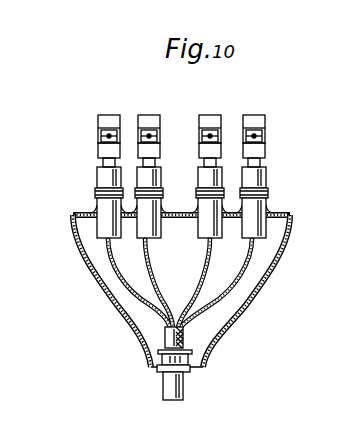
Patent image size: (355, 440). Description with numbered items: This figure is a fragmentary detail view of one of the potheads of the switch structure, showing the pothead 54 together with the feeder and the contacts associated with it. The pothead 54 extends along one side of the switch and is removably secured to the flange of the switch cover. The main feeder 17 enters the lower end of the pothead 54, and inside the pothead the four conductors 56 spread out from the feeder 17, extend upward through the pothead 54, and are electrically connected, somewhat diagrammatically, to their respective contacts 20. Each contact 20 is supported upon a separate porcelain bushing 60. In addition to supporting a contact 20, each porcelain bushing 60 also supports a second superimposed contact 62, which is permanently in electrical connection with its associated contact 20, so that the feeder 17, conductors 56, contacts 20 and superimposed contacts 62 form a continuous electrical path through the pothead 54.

The main feeder 17 is at (186, 388).
The contact 20 is at (151, 152).
The pothead 54 is at (240, 309).
The conductors 56 is at (146, 265).
The porcelain bushing 60 is at (146, 230).
The superimposed contact 62 is at (152, 117).